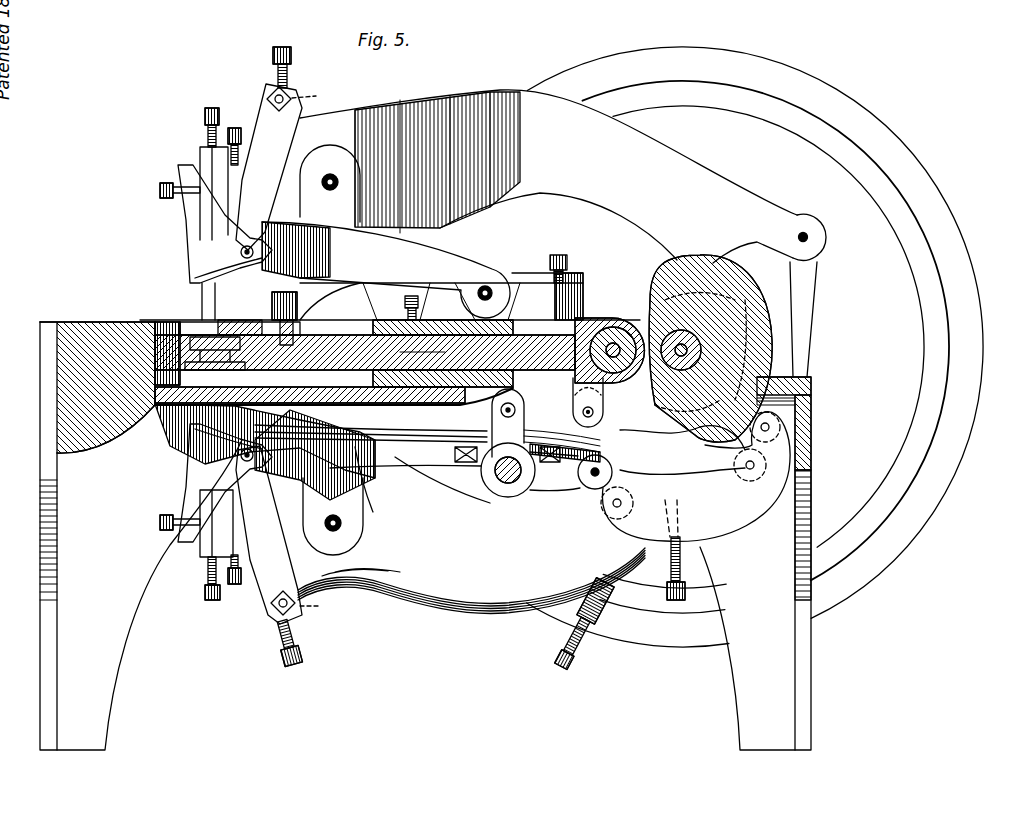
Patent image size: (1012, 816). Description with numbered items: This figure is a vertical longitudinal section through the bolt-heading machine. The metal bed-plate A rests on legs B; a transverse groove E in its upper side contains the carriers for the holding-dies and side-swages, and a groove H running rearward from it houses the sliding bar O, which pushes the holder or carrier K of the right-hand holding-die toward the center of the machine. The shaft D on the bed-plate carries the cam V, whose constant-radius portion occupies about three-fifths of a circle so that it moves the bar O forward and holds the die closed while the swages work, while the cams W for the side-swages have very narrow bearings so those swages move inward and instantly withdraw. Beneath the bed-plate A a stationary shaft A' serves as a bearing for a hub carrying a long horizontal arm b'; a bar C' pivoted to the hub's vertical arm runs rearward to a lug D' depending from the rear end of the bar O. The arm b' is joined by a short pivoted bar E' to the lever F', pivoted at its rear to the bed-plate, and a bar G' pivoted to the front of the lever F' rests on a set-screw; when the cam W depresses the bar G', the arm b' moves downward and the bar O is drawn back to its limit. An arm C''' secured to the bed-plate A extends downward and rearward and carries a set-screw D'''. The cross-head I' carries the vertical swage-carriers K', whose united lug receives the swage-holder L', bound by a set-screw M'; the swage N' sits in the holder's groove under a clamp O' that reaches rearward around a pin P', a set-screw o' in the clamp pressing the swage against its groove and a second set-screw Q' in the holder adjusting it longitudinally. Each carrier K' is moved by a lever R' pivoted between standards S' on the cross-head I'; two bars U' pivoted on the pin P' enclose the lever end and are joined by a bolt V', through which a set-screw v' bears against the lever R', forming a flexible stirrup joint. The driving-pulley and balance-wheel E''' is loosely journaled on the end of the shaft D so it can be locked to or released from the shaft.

The driving-pulley and balance-wheel E''' is at (755, 347).
The bed-plate A is at (97, 387).
The legs B is at (425, 536).
The sliding bar O is at (392, 350).
The holder K is at (334, 362).
The groove E is at (227, 344).
The cross-head I' is at (392, 287).
The lever R' is at (490, 352).
The standards S' is at (331, 350).
The vertical swage-carrier K' is at (407, 345).
The cam V is at (710, 348).
The shaft D is at (681, 350).
The cams W is at (687, 389).
The bar C' is at (546, 425).
The lug D' is at (598, 402).
The shaft A' is at (530, 470).
The horizontal arm b' is at (586, 472).
The pivoted bar E' is at (617, 491).
The bar G' is at (700, 446).
The lever F' is at (696, 477).
The groove H is at (679, 550).
The arm C''' is at (595, 624).
The set-screw D''' is at (548, 649).
The bars U' is at (269, 167).
The set-screw v' is at (293, 346).
The bolt V' is at (315, 350).
The swage N' is at (269, 535).
The swage-holder L' is at (216, 352).
The set-screw Q' is at (205, 352).
The set-screw M' is at (235, 353).
The set-screw o' is at (172, 353).
The clamp O' is at (225, 353).
The pin P' is at (244, 353).